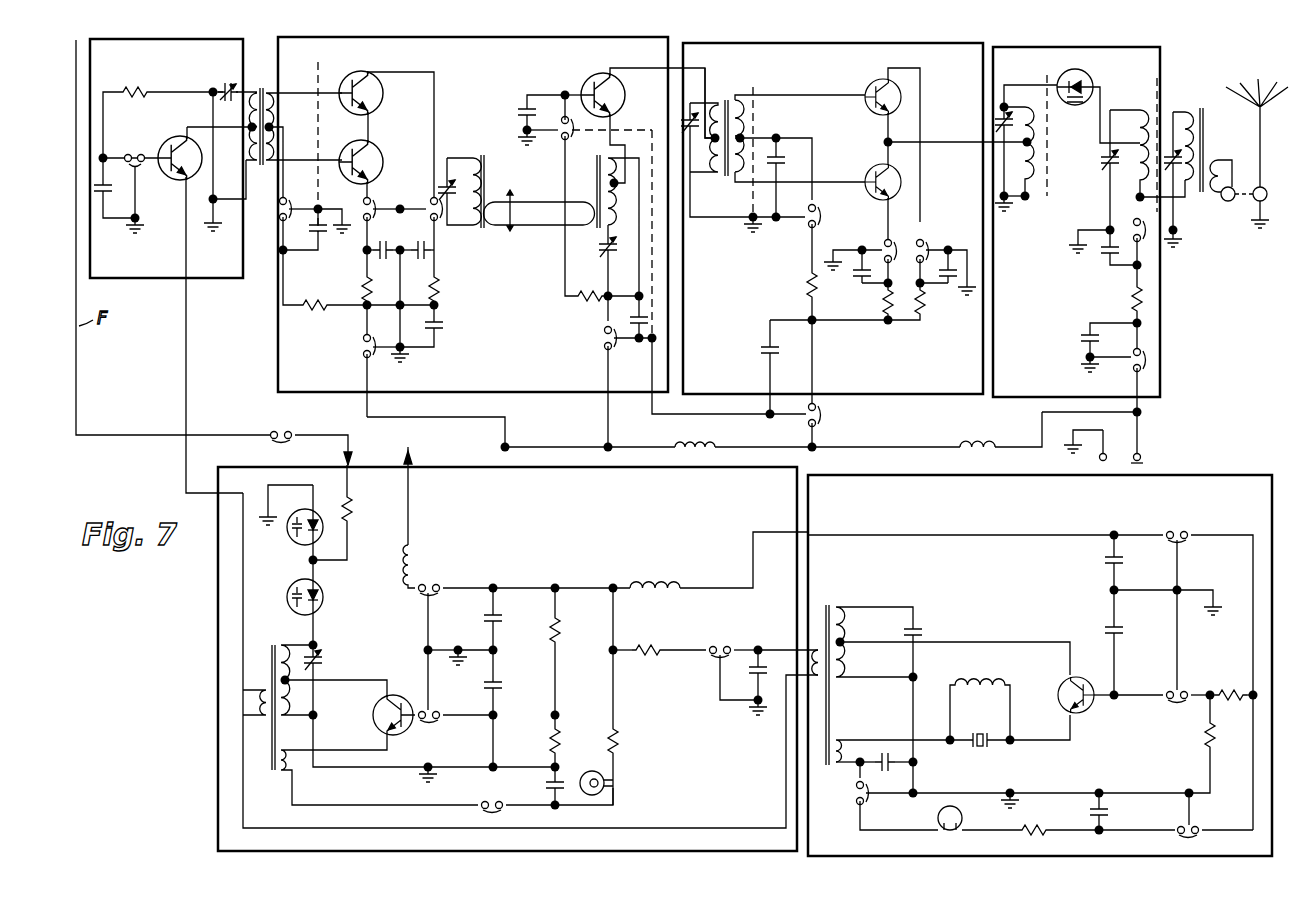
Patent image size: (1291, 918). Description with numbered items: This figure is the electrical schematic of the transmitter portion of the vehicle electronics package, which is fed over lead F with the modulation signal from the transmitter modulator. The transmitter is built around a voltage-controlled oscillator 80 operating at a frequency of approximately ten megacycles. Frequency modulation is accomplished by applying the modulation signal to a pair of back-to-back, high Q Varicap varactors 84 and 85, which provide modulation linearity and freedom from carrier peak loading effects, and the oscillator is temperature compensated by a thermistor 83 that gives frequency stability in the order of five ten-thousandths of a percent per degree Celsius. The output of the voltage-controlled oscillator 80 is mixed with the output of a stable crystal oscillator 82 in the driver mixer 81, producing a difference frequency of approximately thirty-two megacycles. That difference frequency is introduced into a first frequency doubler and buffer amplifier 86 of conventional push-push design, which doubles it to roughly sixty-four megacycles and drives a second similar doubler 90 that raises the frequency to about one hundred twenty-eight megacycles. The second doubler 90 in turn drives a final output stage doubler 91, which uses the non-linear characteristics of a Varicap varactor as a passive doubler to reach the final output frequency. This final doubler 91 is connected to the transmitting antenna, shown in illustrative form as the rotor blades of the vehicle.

The voltage-controlled oscillator 80 is at (500, 658).
The driver mixer 81 is at (200, 280).
The crystal oscillator 82 is at (1195, 475).
The thermistor 83 is at (586, 776).
The varactor 84 is at (325, 598).
The varactor 85 is at (316, 511).
The first frequency doubler and buffer amplifier 86 is at (278, 318).
The second frequency doubler 90 is at (938, 394).
The final output stage doubler 91 is at (1160, 318).